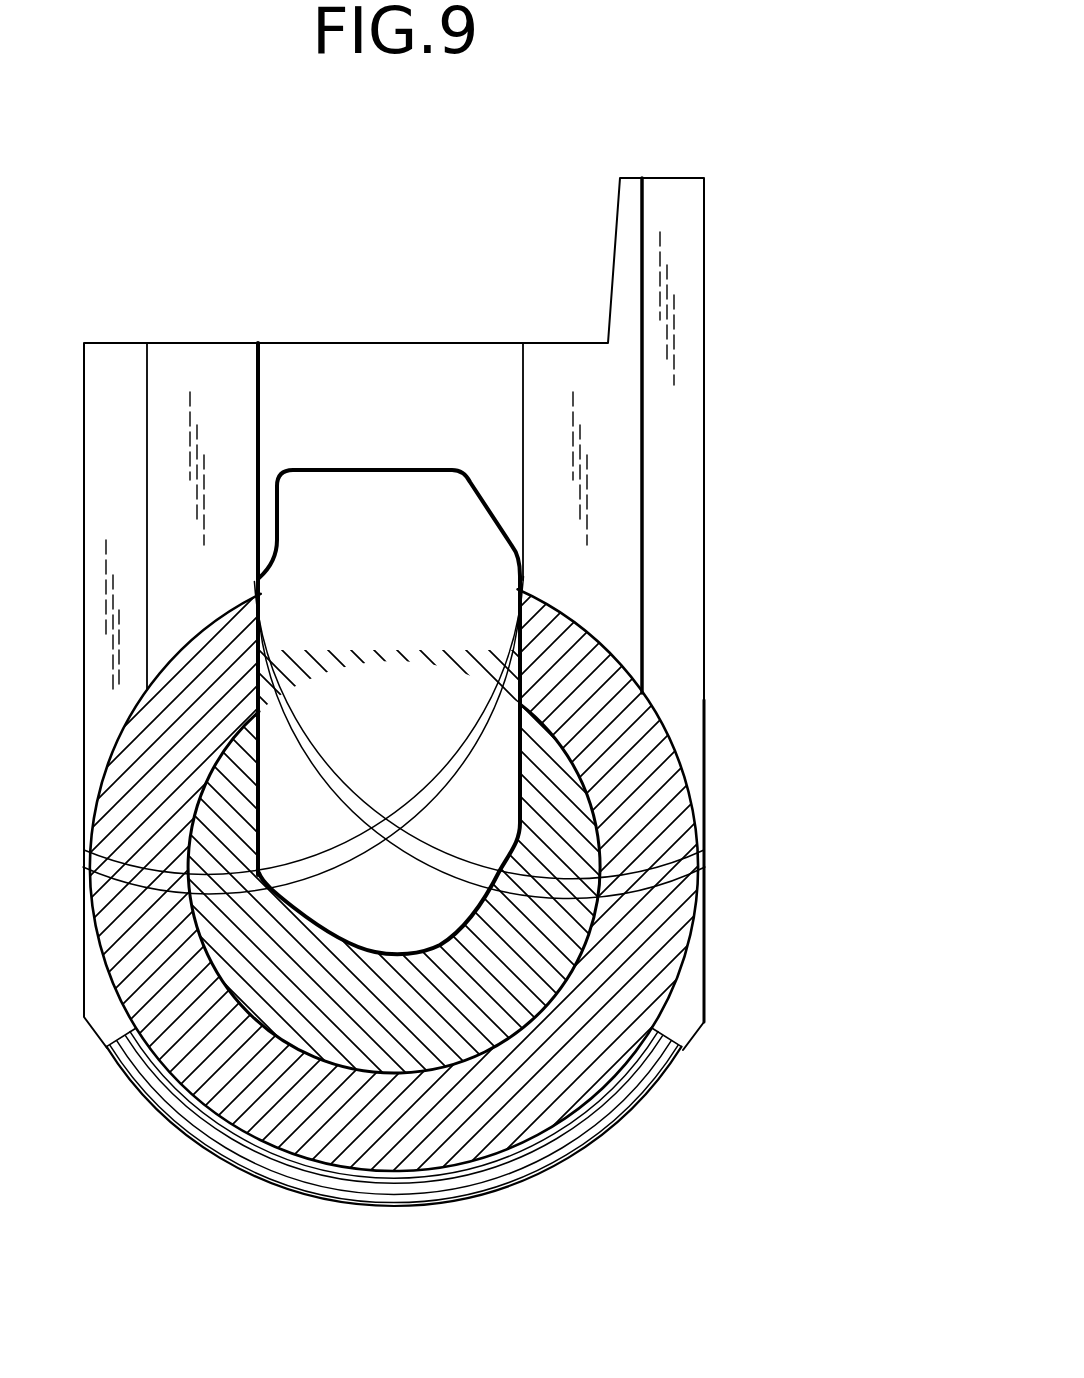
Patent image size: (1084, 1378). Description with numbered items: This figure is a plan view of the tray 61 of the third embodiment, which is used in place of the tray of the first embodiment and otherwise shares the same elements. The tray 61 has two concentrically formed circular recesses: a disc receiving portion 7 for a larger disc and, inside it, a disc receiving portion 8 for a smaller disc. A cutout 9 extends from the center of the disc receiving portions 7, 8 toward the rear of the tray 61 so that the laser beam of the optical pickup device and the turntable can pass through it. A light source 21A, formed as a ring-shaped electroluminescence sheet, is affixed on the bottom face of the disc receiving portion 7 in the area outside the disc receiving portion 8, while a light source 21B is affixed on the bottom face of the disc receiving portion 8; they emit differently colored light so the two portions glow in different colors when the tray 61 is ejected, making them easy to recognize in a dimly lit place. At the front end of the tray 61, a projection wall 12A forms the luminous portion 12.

The tray 61 is at (790, 386).
The cutout 9 is at (398, 505).
The disc receiving portion 7 is at (662, 716).
The light source 21A is at (653, 790).
The disc receiving portion 8 is at (604, 873).
The light source 21B is at (520, 953).
The luminous portion 12 is at (483, 1203).
The projection wall 12A is at (522, 1165).